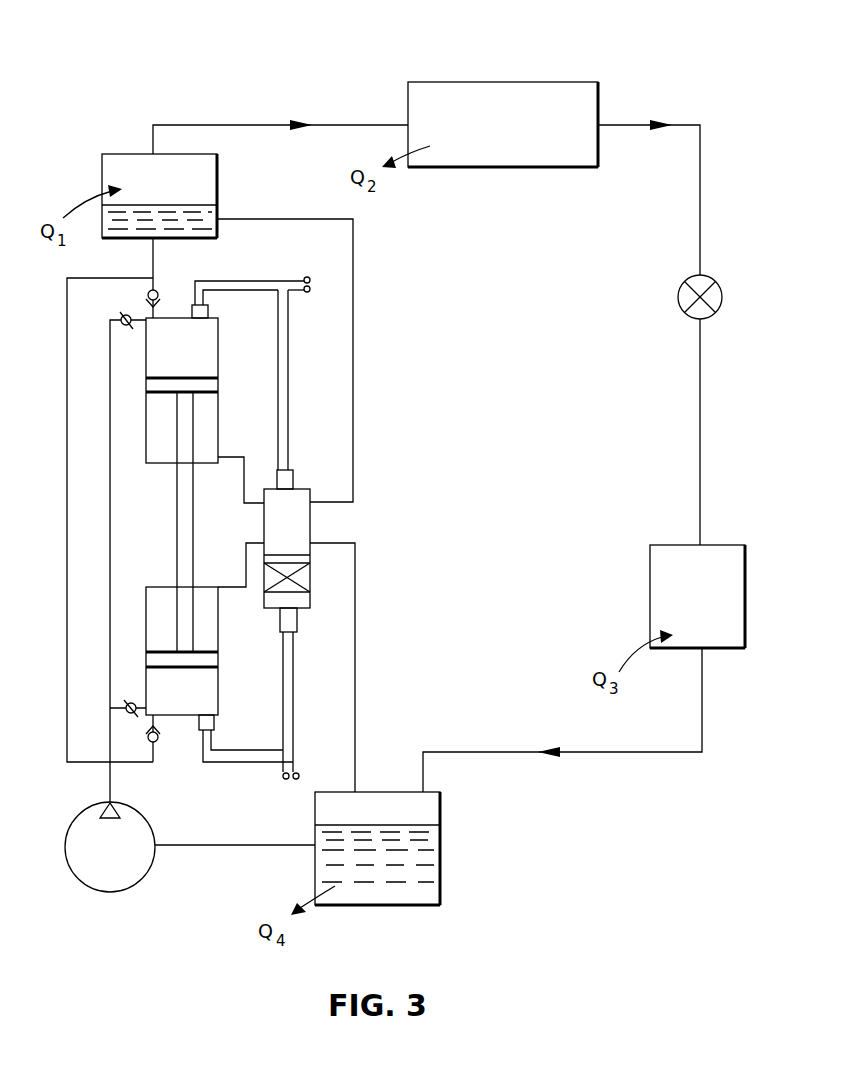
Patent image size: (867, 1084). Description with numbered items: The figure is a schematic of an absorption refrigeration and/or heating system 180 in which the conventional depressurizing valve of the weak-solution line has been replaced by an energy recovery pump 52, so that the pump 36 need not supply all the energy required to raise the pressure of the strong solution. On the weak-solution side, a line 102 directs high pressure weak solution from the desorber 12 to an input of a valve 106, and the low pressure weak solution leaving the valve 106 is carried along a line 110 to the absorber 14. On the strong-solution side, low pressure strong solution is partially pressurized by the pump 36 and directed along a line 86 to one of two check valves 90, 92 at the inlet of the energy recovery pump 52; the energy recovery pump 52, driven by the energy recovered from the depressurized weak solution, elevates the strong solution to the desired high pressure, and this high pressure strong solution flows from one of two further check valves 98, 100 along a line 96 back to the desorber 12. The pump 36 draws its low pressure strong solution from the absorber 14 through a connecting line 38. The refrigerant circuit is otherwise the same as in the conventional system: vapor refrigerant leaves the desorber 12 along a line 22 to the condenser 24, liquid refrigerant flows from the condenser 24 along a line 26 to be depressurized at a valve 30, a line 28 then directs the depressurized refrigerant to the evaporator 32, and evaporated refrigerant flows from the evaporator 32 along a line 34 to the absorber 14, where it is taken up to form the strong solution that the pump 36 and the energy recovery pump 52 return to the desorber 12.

The system 180 is at (346, 74).
The desorber 12 is at (219, 189).
The absorber 14 is at (409, 906).
The line 22 is at (182, 125).
The condenser 24 is at (489, 82).
The line 26 is at (703, 208).
The line 28 is at (703, 450).
The valve 30 is at (713, 314).
The evaporator 32 is at (717, 648).
The line 34 is at (608, 753).
The pump 36 is at (99, 891).
The conduit from pump to absorber 38 is at (184, 846).
The energy recovery pump 52 is at (328, 399).
The line 86 is at (110, 484).
The check valve 90 is at (122, 316).
The check valve 92 is at (126, 708).
The line 96 is at (66, 425).
The check valve 98 is at (158, 291).
The check valve 100 is at (156, 742).
The line 102 is at (354, 300).
The valve 106 is at (311, 529).
The line 110 is at (357, 676).